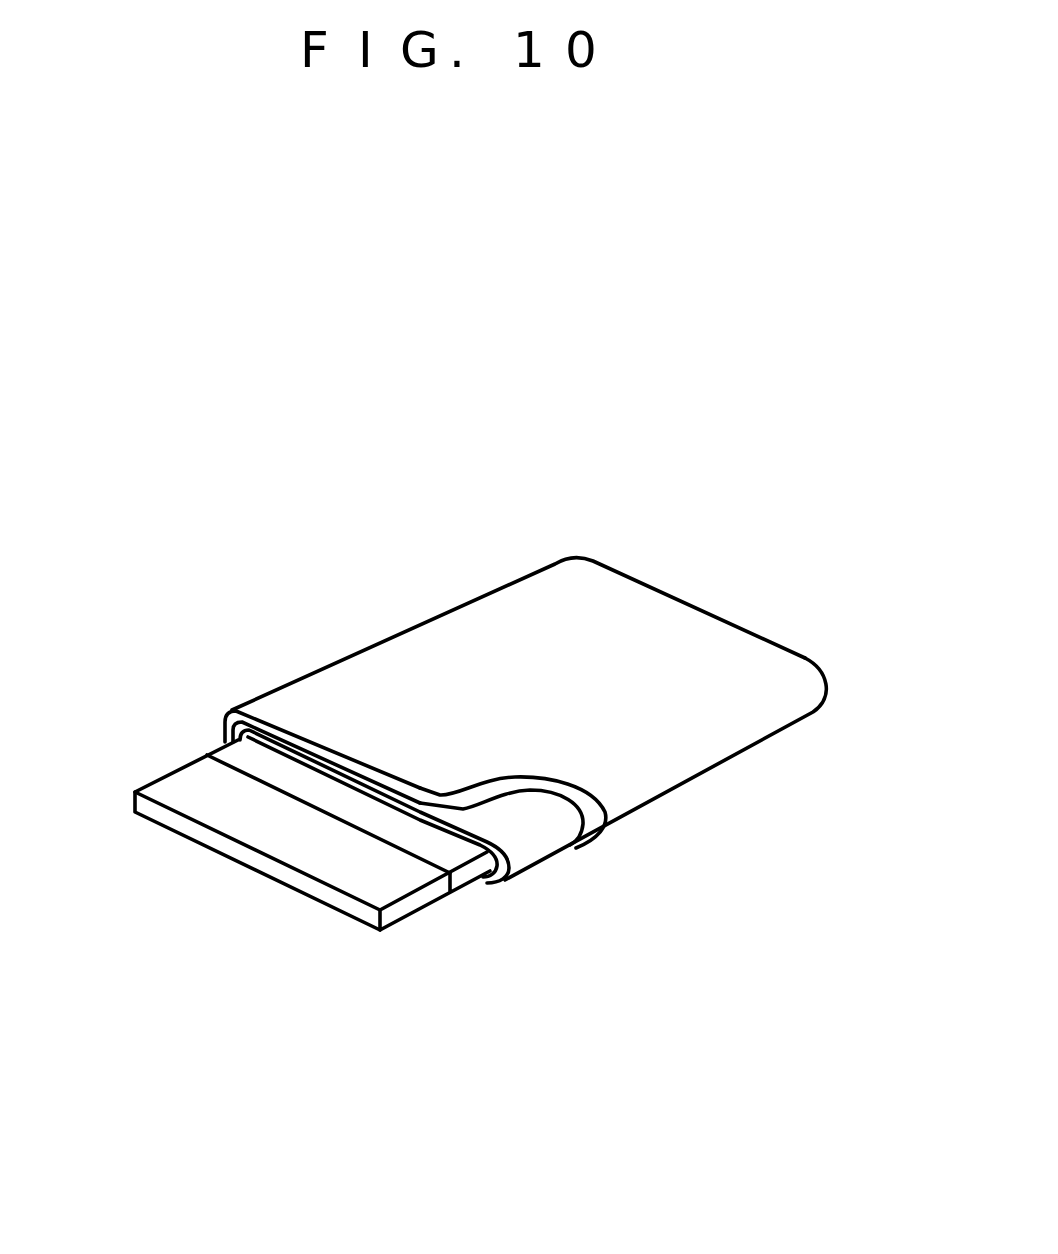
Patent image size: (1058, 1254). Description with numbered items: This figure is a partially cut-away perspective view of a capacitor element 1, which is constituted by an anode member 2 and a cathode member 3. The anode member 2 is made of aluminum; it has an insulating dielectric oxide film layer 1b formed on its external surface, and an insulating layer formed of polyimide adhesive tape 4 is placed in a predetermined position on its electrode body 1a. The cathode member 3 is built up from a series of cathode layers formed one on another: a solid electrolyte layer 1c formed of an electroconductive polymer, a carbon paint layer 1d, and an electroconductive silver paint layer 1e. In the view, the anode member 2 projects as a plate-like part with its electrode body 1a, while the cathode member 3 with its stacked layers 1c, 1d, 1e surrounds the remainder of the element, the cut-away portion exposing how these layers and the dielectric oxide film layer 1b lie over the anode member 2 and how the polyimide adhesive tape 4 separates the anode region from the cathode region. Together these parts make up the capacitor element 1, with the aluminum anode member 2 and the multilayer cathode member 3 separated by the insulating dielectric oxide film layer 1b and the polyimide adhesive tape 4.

The capacitor element 1 is at (488, 766).
The electrode body 1a is at (172, 825).
The dielectric oxide film layer 1b is at (383, 873).
The solid electrolyte layer 1c is at (363, 790).
The carbon paint layer 1d is at (533, 823).
The electroconductive silver paint layer 1e is at (657, 622).
The anode member 2 is at (277, 909).
The cathode member 3 is at (435, 655).
The polyimide adhesive tape 4 is at (443, 848).